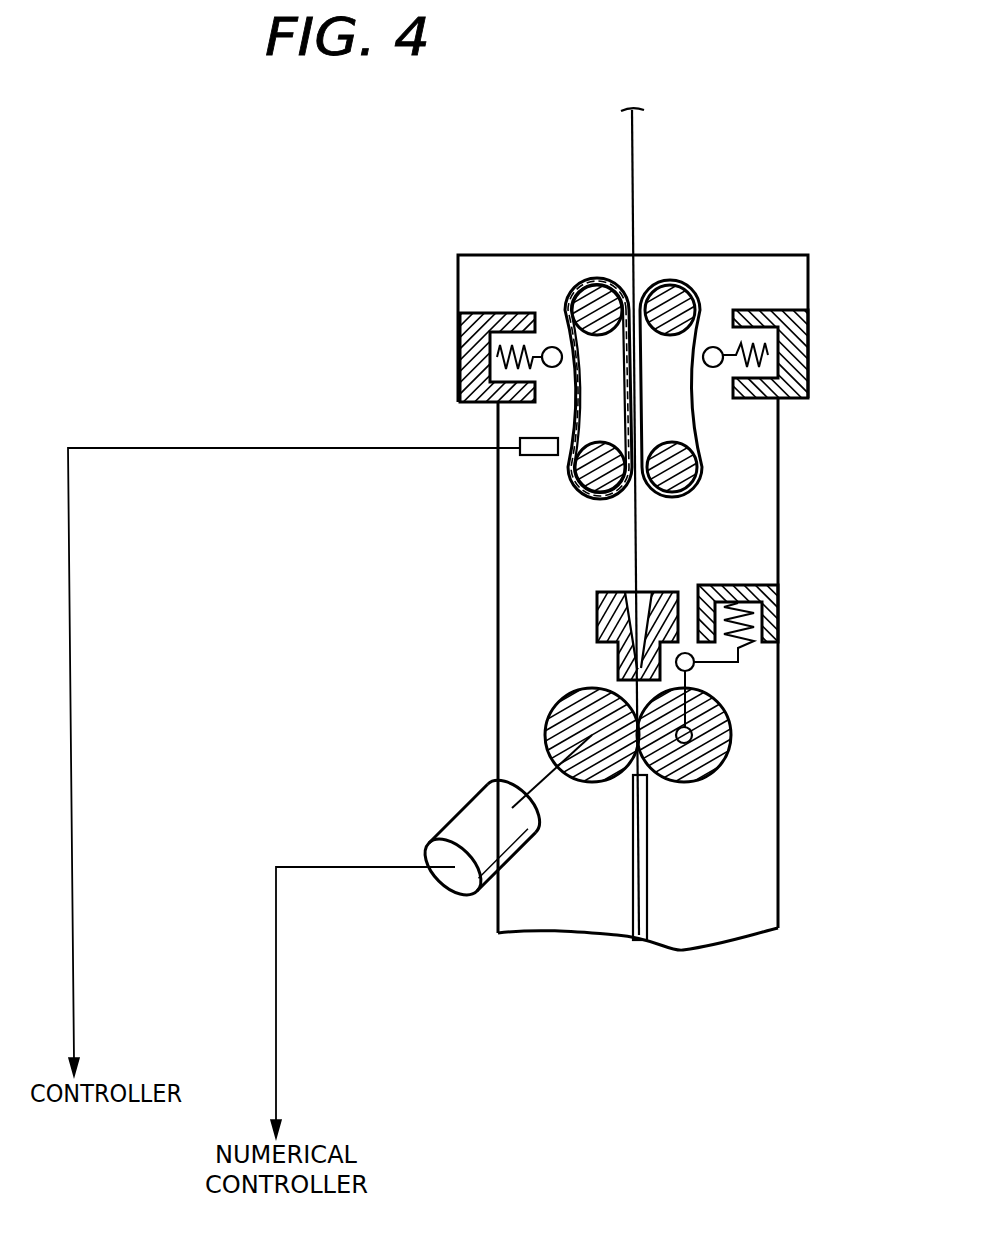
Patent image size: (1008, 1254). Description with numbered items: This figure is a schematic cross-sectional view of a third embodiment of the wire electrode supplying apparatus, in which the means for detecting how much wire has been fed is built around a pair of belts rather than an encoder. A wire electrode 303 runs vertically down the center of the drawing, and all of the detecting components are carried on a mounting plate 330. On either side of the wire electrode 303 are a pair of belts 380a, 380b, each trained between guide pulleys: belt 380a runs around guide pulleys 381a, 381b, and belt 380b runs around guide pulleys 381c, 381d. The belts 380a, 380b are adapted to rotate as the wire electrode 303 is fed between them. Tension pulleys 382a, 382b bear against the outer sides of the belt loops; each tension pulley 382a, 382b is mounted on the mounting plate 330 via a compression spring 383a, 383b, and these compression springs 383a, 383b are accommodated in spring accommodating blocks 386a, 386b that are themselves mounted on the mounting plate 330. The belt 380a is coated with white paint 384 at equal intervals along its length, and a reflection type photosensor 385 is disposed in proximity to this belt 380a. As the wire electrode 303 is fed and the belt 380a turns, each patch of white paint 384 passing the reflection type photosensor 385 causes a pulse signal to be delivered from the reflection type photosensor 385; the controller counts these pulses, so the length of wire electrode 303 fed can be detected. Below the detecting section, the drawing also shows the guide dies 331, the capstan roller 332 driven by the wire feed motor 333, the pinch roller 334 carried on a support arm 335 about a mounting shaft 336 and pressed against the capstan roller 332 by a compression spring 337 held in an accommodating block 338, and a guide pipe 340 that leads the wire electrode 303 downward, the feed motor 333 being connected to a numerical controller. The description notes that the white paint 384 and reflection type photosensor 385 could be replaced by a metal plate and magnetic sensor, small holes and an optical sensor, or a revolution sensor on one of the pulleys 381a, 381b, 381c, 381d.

The wire electrode 303 is at (633, 192).
The mounting plate 330 is at (765, 878).
The wire guide 331 is at (612, 618).
The feed roller 332 is at (578, 700).
The motor 333 is at (476, 804).
The pinch roller 334 is at (718, 765).
The roller shaft 335 is at (718, 712).
The pivot pin 336 is at (695, 677).
The spring 337 is at (778, 620).
The spring holder 338 is at (770, 587).
The guide pipe 340 is at (648, 805).
The belt 380a is at (570, 400).
The belt 380b is at (700, 428).
The guide pulley 381a is at (578, 497).
The guide pulley 381b is at (590, 290).
The guide pulley 381c is at (676, 290).
The guide pulley 381d is at (690, 497).
The tension pulley 382a is at (488, 316).
The tension pulley 382b is at (790, 316).
The compression spring 383a is at (553, 347).
The compression spring 383b is at (713, 347).
The white paint 384 is at (573, 290).
The reflection type photosensor 385 is at (535, 455).
The spring accommodating block 386a is at (473, 347).
The spring accommodating block 386b is at (792, 353).